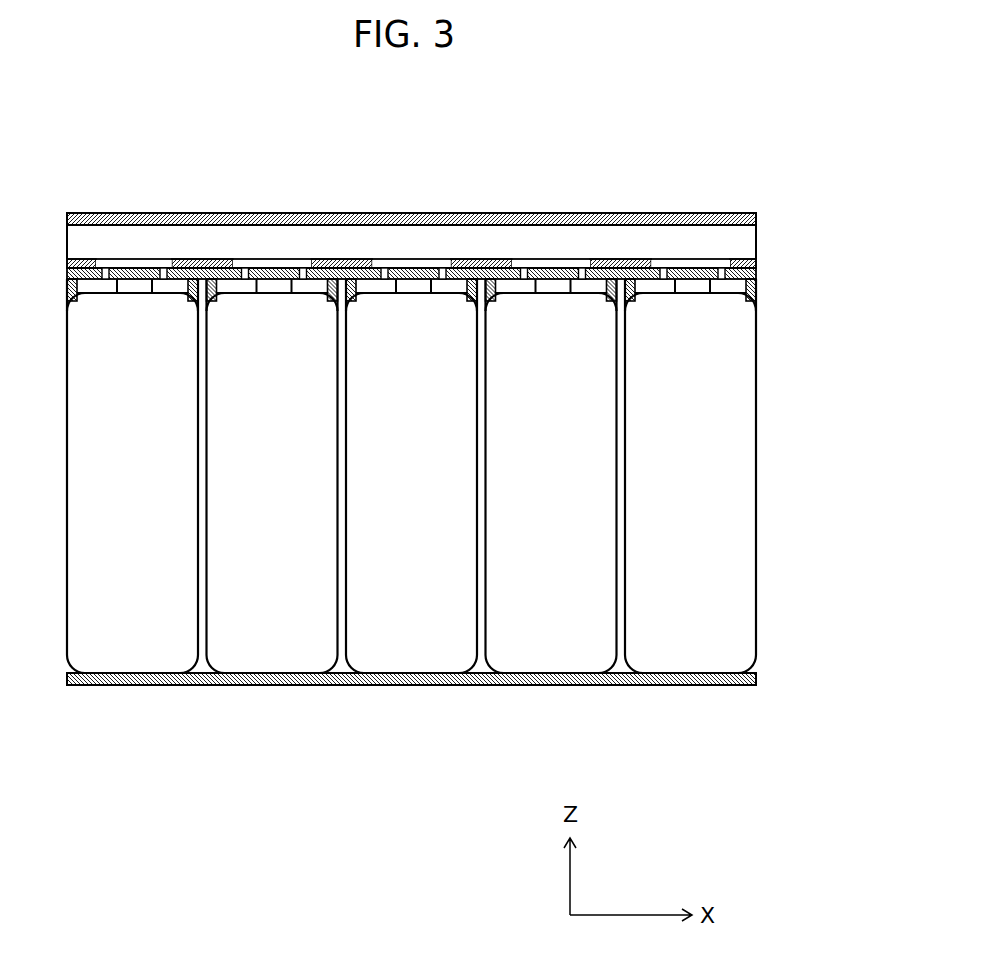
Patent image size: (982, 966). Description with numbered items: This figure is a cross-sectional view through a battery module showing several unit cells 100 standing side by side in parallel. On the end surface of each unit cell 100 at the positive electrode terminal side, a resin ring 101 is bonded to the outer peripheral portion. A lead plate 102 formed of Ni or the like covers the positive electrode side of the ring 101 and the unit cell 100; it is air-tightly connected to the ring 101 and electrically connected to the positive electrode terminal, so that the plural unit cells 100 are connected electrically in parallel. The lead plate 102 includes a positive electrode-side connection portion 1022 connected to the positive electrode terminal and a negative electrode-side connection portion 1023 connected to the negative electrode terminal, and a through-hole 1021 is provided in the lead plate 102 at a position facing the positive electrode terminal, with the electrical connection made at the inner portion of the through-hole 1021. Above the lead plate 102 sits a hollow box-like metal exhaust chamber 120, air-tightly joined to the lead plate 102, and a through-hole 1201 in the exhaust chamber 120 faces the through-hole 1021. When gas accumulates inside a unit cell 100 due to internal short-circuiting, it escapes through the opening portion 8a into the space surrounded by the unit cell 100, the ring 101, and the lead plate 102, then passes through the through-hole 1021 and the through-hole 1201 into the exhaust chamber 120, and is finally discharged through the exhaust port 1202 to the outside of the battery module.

The unit cell 100 is at (687, 650).
The ring 101 is at (757, 288).
The lead plate 102 is at (411, 474).
The through-hole 1021 is at (445, 268).
The positive electrode-side connection portion 1022 is at (405, 268).
The negative electrode-side connection portion 1023 is at (430, 687).
The opening portion 8a is at (528, 277).
The exhaust chamber 120 is at (430, 213).
The through-hole 1201 is at (540, 260).
The exhaust port 1202 is at (757, 214).